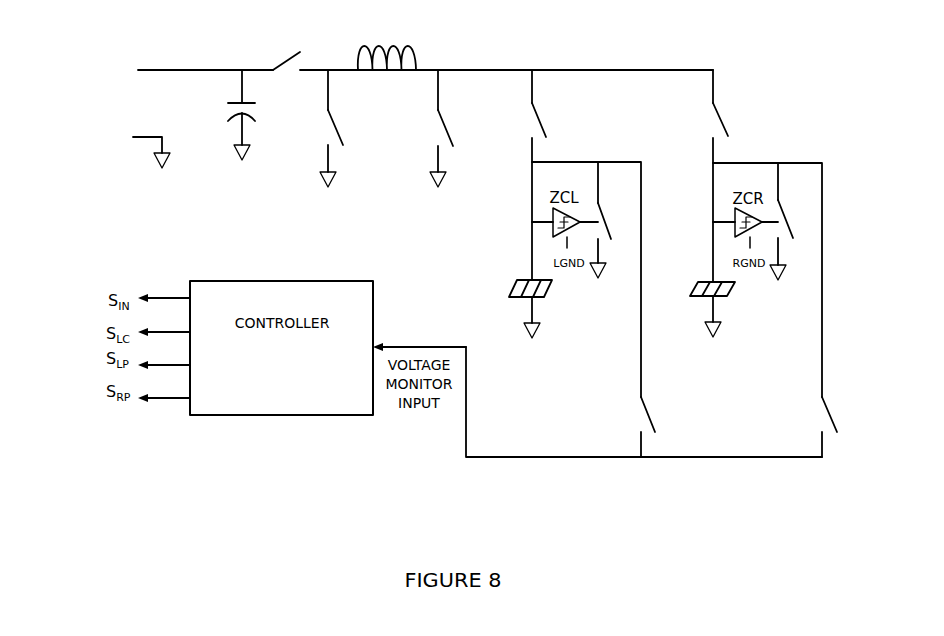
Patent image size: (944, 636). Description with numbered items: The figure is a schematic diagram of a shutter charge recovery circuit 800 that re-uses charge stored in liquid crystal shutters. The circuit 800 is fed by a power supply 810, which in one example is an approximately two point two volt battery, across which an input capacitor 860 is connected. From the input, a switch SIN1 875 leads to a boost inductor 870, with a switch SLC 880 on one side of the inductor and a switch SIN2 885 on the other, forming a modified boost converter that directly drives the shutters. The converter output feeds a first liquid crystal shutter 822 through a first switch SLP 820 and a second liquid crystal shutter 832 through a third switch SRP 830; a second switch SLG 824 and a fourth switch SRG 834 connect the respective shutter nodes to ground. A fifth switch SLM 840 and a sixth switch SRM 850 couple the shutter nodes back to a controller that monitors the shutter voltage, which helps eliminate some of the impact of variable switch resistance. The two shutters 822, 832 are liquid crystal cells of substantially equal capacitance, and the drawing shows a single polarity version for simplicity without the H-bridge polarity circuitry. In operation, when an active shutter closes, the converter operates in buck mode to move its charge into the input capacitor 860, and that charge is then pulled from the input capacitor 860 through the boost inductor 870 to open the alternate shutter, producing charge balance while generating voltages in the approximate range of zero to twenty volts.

The shutter charge recovery circuit 800 is at (257, 486).
The power supply 810 is at (112, 114).
The input capacitor 860 is at (230, 137).
The switch SIN1 875 is at (288, 51).
The boost inductor 870 is at (394, 67).
The switch SLC 880 is at (312, 128).
The switch SIN2 885 is at (431, 128).
The first switch SLP 820 is at (558, 103).
The third switch SRP 830 is at (739, 116).
The second switch SLG 824 is at (612, 220).
The fourth switch SRG 834 is at (793, 221).
The first liquid crystal shutter 822 is at (511, 321).
The second liquid crystal shutter 832 is at (699, 321).
The fifth switch SLM 840 is at (667, 424).
The sixth switch SRM 850 is at (844, 424).